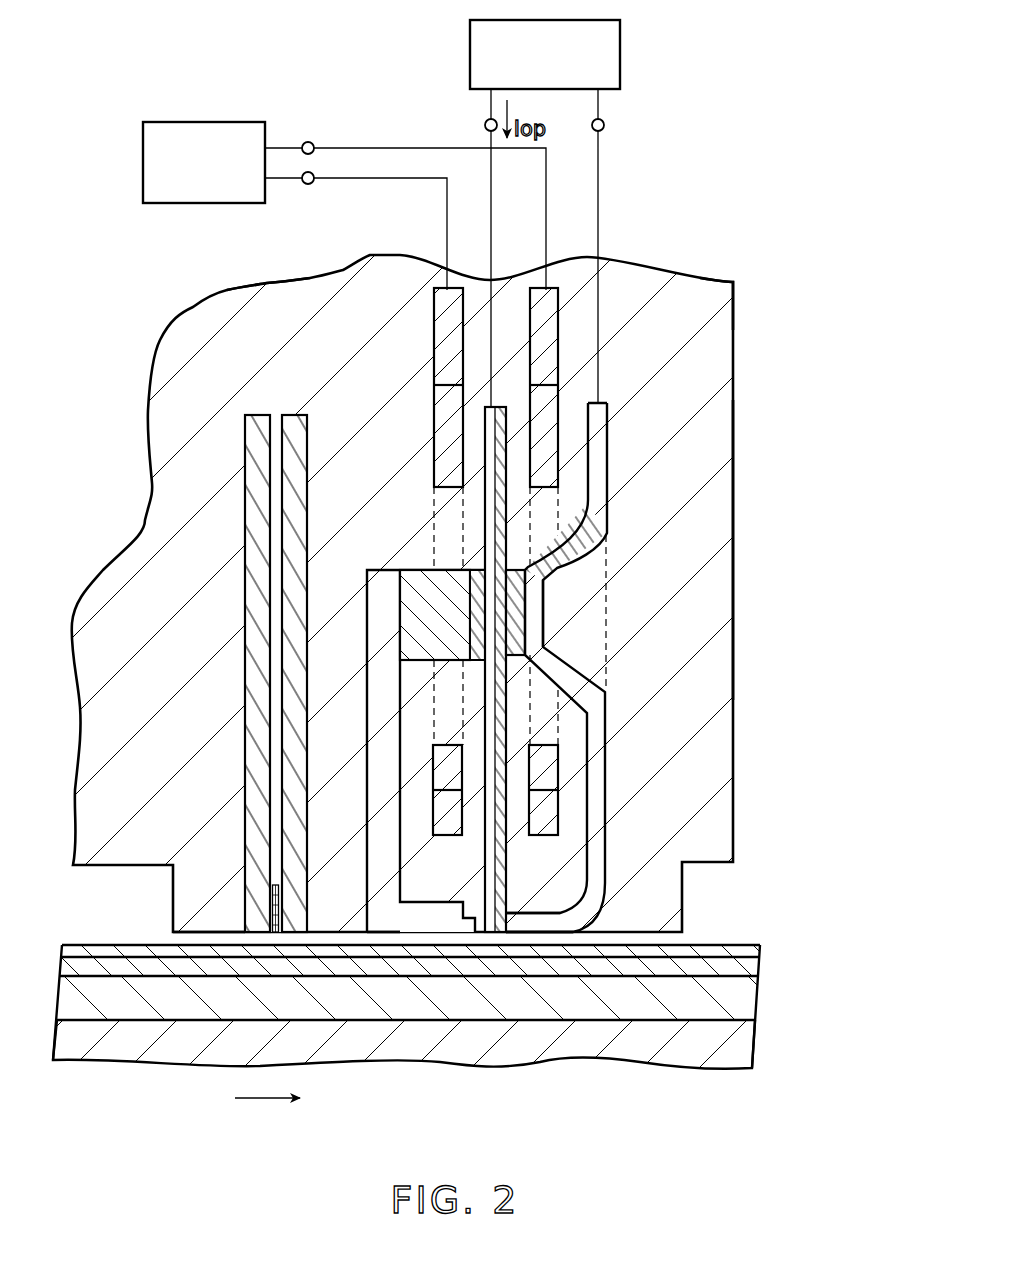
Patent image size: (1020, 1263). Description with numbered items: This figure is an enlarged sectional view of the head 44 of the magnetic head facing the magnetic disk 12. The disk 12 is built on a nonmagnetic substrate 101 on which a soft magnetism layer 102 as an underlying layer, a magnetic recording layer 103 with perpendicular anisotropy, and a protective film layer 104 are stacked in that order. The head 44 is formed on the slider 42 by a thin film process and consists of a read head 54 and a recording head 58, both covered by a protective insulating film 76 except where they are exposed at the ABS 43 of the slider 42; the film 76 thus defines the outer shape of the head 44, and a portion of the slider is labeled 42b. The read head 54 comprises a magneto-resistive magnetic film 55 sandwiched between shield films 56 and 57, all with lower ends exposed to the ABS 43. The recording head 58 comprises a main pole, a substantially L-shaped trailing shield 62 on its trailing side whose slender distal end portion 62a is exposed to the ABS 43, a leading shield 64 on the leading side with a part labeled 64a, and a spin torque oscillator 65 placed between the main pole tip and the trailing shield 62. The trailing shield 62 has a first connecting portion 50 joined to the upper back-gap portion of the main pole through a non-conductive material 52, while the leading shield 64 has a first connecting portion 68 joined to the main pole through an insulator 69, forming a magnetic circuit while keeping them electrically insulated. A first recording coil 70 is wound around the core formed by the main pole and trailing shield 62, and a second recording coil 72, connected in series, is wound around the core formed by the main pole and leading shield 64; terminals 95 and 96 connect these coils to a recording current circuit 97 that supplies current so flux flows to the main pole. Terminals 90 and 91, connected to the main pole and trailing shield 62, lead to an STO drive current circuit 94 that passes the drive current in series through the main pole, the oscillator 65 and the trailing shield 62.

The magnetic disk 12 is at (440, 1039).
The slider 42 is at (158, 388).
The trailing end of head slider 42b is at (735, 512).
The ABS 43 is at (192, 933).
The head 44 is at (262, 282).
The first connecting portion 50 is at (530, 618).
The non-conductive material 52 is at (512, 590).
The read head 54 is at (253, 647).
The magnetic film 55 is at (272, 895).
The shield film 56 is at (253, 622).
The shield film 57 is at (300, 557).
The recording head 58 is at (534, 598).
The trailing shield 62 is at (620, 708).
The distal end portion 62a is at (555, 925).
The leading shield 64 is at (370, 695).
The tip of main magnetic pole 64a is at (404, 925).
The spin torque oscillator 65 is at (495, 930).
The first connecting portion 68 is at (418, 578).
The insulator 69 is at (477, 612).
The first recording coil 70 is at (601, 561).
The second recording coil 72 is at (433, 407).
The protective insulating film 76 is at (714, 290).
The terminal 90 is at (485, 126).
The terminal 91 is at (604, 125).
The STO drive current circuit 94 is at (620, 55).
The terminal 95 is at (306, 142).
The terminal 96 is at (306, 184).
The recording current circuit 97 is at (143, 162).
The substrate 101 is at (748, 1050).
The soft magnetism layer 102 is at (758, 1000).
The magnetic recording layer 103 is at (764, 970).
The protective film layer 104 is at (762, 948).